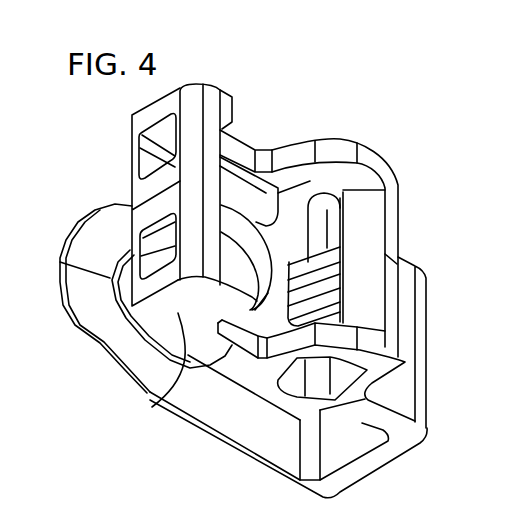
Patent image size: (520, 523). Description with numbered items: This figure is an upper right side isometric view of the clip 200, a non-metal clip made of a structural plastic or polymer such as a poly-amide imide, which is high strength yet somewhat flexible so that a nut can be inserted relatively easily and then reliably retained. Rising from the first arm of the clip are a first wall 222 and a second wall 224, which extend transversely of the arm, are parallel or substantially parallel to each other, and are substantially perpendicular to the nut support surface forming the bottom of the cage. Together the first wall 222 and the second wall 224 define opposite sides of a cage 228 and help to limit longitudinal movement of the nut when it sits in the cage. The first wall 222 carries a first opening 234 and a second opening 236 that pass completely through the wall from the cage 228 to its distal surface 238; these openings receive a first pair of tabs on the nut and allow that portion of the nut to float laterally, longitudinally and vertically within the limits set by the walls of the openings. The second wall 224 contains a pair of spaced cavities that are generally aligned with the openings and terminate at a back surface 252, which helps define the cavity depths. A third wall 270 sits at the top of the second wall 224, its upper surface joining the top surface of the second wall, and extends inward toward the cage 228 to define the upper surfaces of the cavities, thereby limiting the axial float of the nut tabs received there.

The clip 200 is at (211, 63).
The first wall 222 is at (141, 395).
The second wall 224 is at (389, 145).
The cage 228 is at (263, 222).
The first opening 234 is at (138, 133).
The second opening 236 is at (135, 247).
The distal surface 238 is at (137, 165).
The back surface 252 is at (312, 395).
The third wall 270 is at (385, 202).